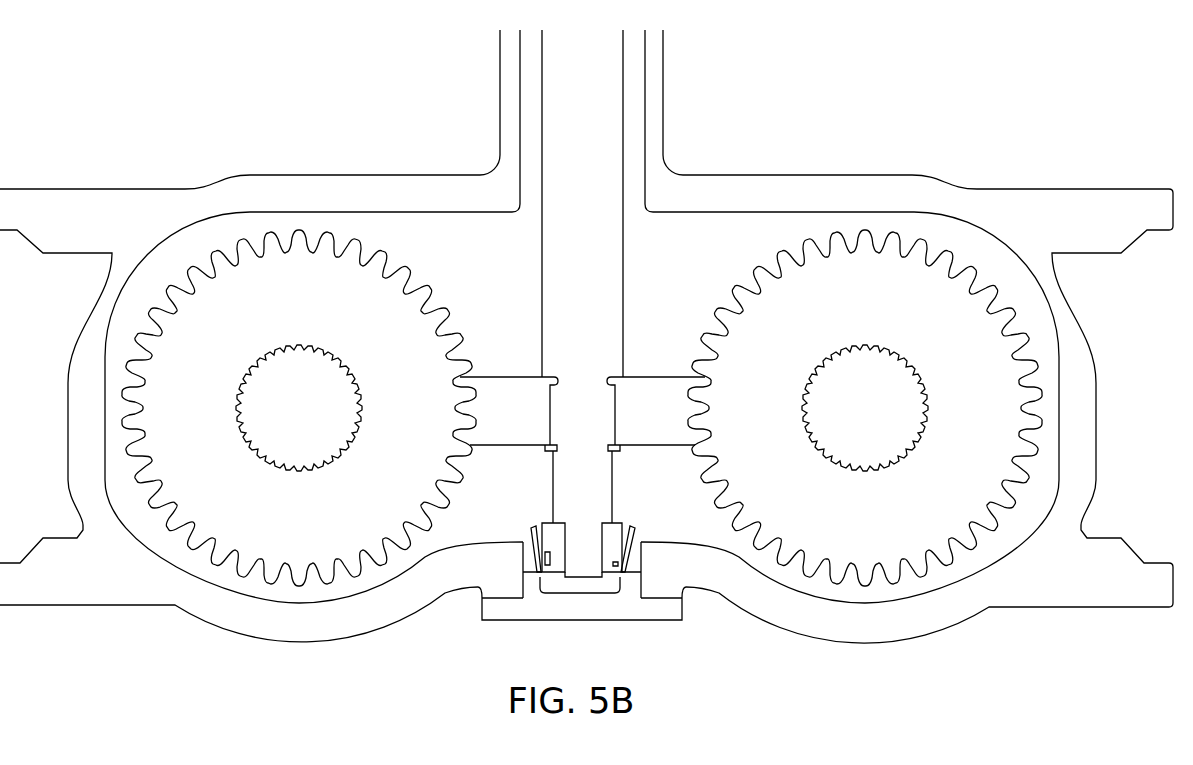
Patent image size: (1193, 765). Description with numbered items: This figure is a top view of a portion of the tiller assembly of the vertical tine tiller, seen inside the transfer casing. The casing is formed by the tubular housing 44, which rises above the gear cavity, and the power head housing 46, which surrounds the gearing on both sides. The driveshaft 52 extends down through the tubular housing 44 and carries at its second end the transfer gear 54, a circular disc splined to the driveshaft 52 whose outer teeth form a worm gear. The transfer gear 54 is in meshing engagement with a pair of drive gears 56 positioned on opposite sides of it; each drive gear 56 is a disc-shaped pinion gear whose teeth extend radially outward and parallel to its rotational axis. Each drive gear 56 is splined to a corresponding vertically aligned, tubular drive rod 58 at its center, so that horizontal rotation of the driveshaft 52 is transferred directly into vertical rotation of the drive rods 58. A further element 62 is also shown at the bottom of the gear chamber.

The tubular housing 44 is at (510, 78).
The power head housing 46 is at (848, 187).
The driveshaft 52 is at (590, 98).
The transfer gear 54 is at (510, 395).
The drive gears 56 is at (367, 307).
The drive rods 58 is at (582, 408).
The pawl mechanism 62 is at (547, 543).